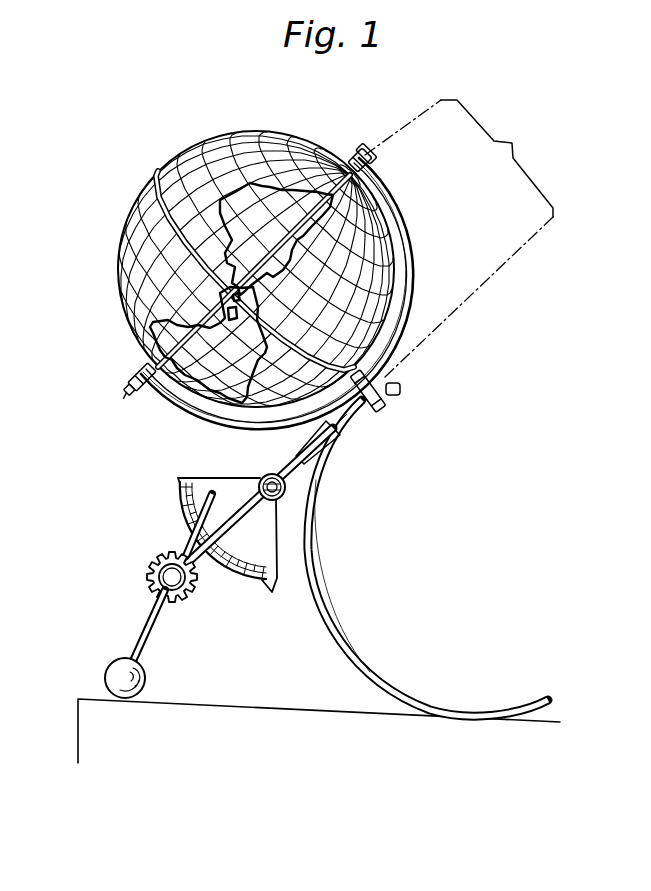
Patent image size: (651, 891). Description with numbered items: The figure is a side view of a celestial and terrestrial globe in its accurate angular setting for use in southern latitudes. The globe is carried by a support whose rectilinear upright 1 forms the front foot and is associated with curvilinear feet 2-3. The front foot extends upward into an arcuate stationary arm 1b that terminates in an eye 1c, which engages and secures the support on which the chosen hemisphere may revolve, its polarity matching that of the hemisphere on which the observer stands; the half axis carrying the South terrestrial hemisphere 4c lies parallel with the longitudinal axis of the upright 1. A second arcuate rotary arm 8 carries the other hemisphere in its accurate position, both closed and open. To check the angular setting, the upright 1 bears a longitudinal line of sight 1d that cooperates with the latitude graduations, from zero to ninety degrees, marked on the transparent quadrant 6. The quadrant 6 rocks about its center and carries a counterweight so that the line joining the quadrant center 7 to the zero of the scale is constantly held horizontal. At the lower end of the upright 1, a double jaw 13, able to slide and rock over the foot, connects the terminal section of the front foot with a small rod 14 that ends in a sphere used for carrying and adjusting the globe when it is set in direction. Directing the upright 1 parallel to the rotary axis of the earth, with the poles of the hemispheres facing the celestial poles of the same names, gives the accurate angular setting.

The upright 1 is at (237, 506).
The arcuate stationary arm 1b is at (414, 254).
The eye 1c is at (362, 150).
The longitudinal line of sight 1d is at (232, 528).
The curvilinear feet 2-3 is at (367, 655).
The South terrestrial hemisphere 4c is at (226, 146).
The transparent quadrant 6 is at (222, 578).
The quadrant center 7 is at (268, 475).
The arcuate rotary arm 8 is at (156, 400).
The double jaw 13 is at (152, 568).
The small rod 14 is at (152, 643).